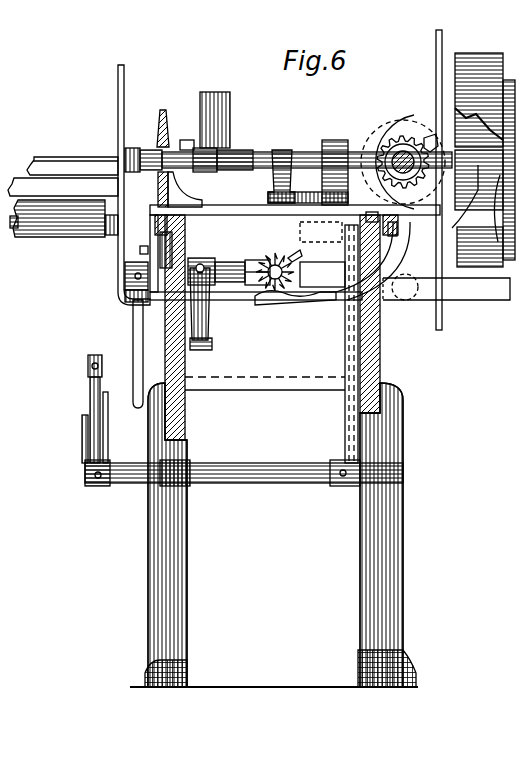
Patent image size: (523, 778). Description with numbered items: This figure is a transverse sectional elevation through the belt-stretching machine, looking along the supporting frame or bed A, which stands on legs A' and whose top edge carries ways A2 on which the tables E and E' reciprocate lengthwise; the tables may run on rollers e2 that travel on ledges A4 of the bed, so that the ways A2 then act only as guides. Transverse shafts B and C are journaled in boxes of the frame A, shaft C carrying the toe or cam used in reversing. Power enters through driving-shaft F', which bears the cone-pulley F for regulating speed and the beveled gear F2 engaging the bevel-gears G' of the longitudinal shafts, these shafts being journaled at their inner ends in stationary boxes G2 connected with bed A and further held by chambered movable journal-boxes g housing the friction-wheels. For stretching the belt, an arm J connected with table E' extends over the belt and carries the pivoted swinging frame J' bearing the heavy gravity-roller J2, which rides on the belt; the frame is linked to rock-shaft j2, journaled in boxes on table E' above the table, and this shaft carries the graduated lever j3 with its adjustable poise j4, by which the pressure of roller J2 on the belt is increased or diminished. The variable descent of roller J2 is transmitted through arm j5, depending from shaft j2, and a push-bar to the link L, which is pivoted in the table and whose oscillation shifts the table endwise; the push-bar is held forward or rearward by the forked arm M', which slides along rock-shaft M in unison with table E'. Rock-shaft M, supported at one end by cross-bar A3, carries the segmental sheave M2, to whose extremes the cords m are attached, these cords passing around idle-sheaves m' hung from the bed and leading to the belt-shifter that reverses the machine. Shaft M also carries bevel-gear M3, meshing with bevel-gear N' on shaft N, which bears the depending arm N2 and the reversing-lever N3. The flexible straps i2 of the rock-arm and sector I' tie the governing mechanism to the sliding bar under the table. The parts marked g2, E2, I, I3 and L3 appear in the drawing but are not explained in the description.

The cords m is at (268, 180).
The idle-sheaves m' is at (269, 293).
The arm J is at (72, 154).
The swinging frame J' is at (63, 187).
The gravity-roller J2 is at (62, 237).
The graduated lever j3 is at (246, 148).
The adjustable poise j4 is at (230, 104).
The forked arm M' is at (235, 147).
The lever g2 is at (162, 118).
The bracket E2 is at (188, 137).
The rock-shaft j2 is at (285, 162).
The table E' is at (169, 193).
The arm j5 is at (292, 199).
The link L is at (318, 199).
The stationary boxes G2 is at (372, 146).
The movable journal-boxes g is at (396, 126).
The bevel-gears G' is at (403, 144).
The beveled gear F2 is at (430, 134).
The cone-pulley F is at (485, 148).
The driving-shaft F' is at (446, 225).
The table E is at (295, 297).
The rollers e2 is at (160, 242).
The ways A2 is at (165, 226).
The transverse shaft B is at (398, 224).
The ledges A4 is at (170, 285).
The supporting frame or bed A is at (275, 451).
The legs A' is at (271, 668).
The bar I is at (244, 466).
The rock-arm and sector I' is at (340, 344).
The flexible straps i2 is at (96, 355).
The bar I3 is at (106, 420).
The reversing-lever N3 is at (133, 340).
The shaft N is at (202, 263).
The bevel-gear N' is at (230, 261).
The transverse shaft C is at (265, 250).
The bevel-gear M3 is at (296, 272).
The rock-shaft M is at (298, 247).
The bracket L3 is at (321, 232).
The cross-bar A3 is at (322, 260).
The segmental wheel or sheave M2 is at (280, 301).
The depending arm N2 is at (211, 318).